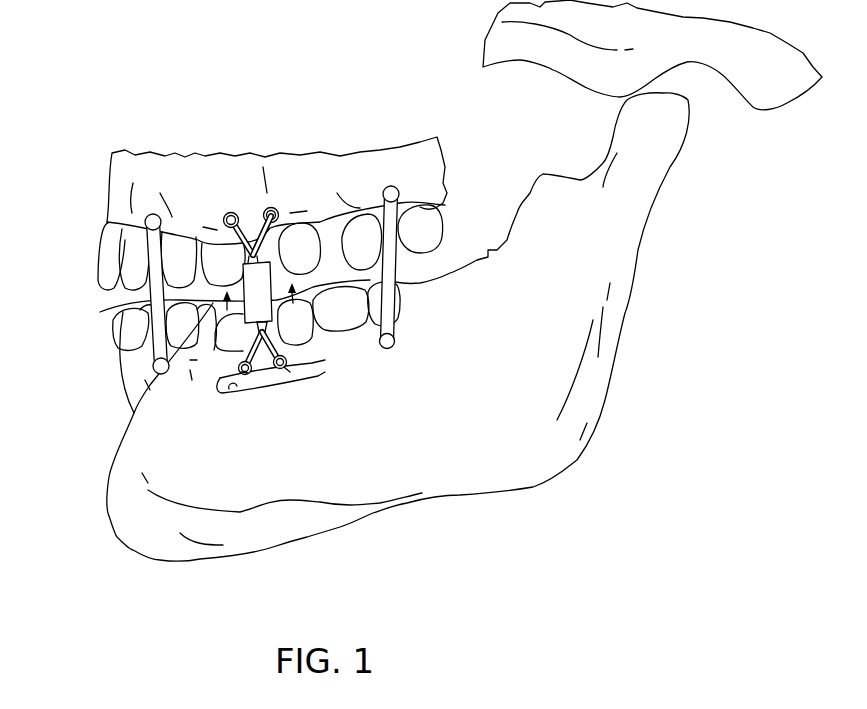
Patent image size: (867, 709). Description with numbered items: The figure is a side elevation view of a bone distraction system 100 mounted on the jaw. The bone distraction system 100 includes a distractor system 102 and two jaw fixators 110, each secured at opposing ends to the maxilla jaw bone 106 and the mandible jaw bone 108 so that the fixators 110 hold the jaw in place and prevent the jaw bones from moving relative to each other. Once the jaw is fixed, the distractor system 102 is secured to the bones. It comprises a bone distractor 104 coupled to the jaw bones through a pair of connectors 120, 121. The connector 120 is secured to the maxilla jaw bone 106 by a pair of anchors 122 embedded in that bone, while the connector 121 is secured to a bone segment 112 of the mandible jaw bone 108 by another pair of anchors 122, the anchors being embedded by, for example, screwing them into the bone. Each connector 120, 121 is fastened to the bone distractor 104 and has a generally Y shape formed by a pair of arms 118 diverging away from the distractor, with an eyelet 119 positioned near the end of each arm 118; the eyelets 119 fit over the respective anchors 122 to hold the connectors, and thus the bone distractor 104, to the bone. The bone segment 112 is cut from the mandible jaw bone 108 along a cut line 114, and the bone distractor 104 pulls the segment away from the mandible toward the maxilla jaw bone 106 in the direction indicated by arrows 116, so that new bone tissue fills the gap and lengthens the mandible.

The bone distraction system 100 is at (104, 77).
The distractor system 102 is at (281, 198).
The bone distractor 104 is at (228, 277).
The maxilla jaw bone 106 is at (388, 184).
The mandible jaw bone 108 is at (288, 426).
The jaw fixator 110 is at (410, 269).
The bone segment 112 is at (305, 360).
The cut line 114 is at (237, 376).
The arrows 116 is at (338, 180).
The arms 118 is at (248, 378).
The eyelet 119 is at (282, 369).
The connector 120 is at (293, 303).
The connector 121 is at (298, 376).
The anchors 122 is at (251, 207).